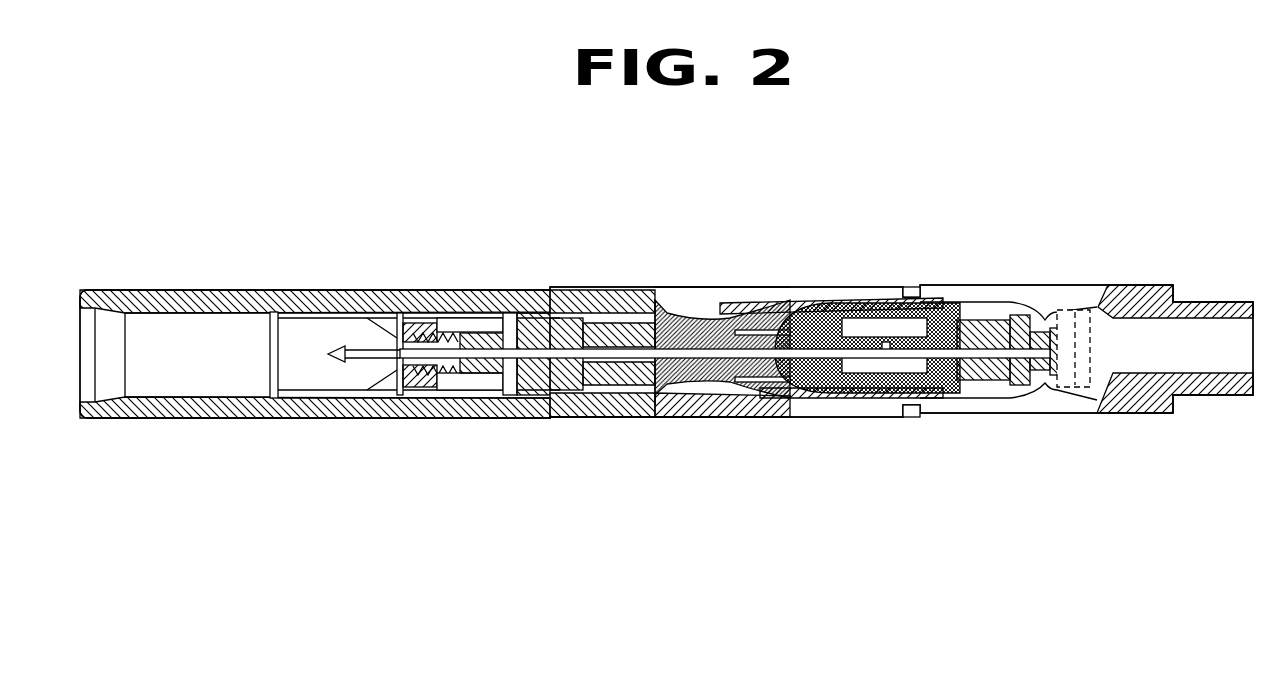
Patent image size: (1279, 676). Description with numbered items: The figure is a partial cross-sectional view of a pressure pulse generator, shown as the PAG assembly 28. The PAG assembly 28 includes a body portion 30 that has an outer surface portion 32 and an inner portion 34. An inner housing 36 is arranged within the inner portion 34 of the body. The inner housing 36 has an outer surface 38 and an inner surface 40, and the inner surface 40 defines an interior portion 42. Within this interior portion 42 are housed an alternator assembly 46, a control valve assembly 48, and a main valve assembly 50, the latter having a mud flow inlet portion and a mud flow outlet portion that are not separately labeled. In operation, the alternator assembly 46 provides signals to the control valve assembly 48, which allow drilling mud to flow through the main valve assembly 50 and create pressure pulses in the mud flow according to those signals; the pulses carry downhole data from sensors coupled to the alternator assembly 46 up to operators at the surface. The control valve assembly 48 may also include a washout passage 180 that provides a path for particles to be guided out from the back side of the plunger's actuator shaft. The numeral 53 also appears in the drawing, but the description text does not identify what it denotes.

The PAG assembly 28 is at (998, 500).
The body portion 30 is at (940, 420).
The outer surface portion 32 is at (770, 413).
The inner portion 34 is at (1097, 307).
The inner housing 36 is at (993, 407).
The outer surface 38 is at (1033, 305).
The inner surface 40 is at (730, 292).
The interior portion 42 is at (598, 292).
The alternator assembly 46 is at (1068, 307).
The control valve assembly 48 is at (703, 288).
The main valve assembly 50 is at (382, 303).
The inner piston 53 is at (528, 297).
The washout passage 180 is at (948, 302).